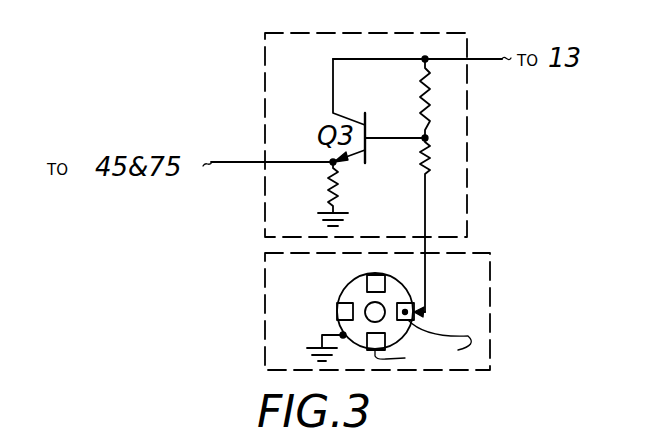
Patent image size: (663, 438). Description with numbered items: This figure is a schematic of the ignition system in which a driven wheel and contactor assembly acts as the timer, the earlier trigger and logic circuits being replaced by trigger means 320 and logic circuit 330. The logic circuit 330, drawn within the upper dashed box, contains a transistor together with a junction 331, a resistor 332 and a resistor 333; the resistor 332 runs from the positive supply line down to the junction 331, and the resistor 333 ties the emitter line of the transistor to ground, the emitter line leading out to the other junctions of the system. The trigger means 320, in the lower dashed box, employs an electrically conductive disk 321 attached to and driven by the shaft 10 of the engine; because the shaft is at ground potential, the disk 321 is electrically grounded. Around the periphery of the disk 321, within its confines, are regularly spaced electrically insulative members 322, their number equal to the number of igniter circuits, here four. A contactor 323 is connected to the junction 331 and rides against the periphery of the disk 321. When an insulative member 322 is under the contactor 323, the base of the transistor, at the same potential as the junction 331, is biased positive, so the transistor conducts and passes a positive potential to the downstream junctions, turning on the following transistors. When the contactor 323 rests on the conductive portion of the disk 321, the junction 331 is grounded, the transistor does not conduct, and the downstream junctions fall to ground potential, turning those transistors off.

The shaft 10 is at (378, 308).
The trigger means 320 is at (490, 327).
The electrically conductive disk 321 is at (342, 325).
The electrically insulative members 322 is at (423, 346).
The contactor 323 is at (426, 280).
The logic circuit 330 is at (467, 146).
The junction 331 is at (420, 164).
The resistor 332 is at (420, 86).
The resistor 333 is at (328, 190).